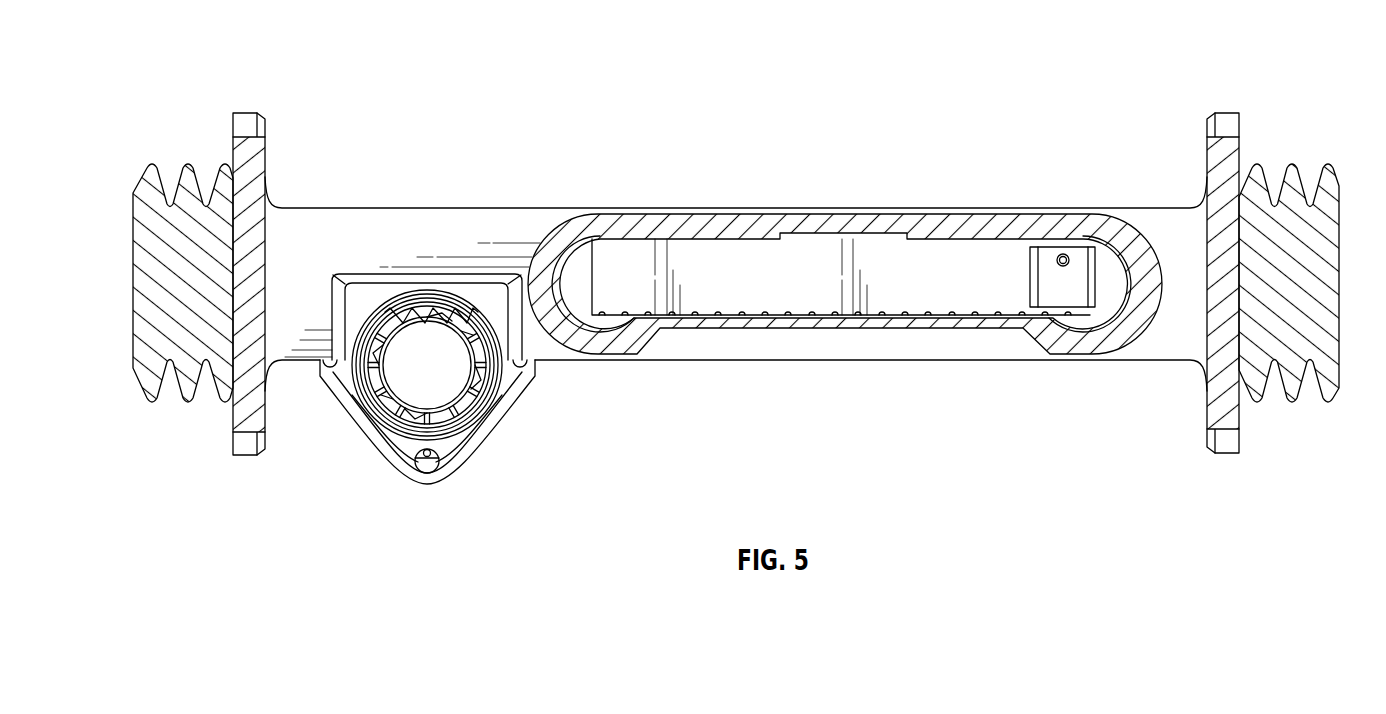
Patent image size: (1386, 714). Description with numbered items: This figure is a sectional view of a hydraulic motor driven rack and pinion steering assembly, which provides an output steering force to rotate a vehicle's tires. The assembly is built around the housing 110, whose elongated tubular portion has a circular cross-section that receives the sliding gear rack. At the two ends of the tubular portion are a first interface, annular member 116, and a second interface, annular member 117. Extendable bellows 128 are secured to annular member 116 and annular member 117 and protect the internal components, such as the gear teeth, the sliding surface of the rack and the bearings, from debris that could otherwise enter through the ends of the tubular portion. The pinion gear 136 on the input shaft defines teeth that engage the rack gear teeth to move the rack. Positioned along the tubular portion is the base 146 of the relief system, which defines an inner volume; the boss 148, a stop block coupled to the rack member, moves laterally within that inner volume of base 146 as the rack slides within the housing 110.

The housing 110 is at (417, 217).
The annular member 116 is at (1226, 113).
The annular member 117 is at (247, 112).
The extendable bellows 128 is at (188, 160).
The pinion gear 136 is at (480, 393).
The base 146 is at (987, 218).
The boss 148 is at (1050, 247).